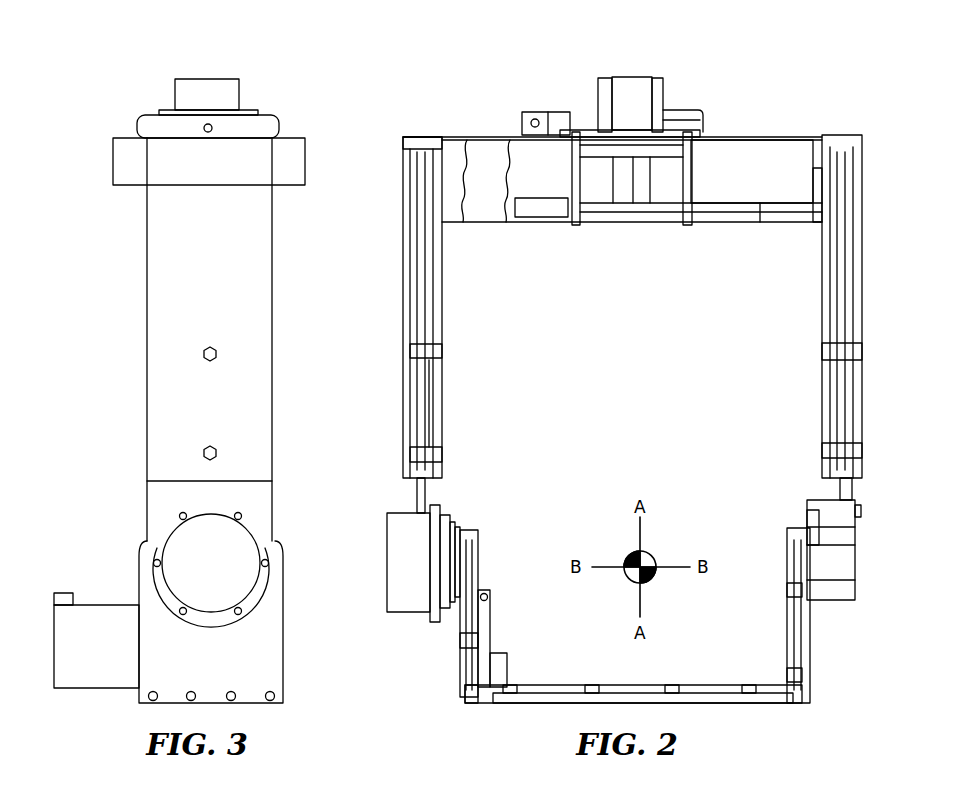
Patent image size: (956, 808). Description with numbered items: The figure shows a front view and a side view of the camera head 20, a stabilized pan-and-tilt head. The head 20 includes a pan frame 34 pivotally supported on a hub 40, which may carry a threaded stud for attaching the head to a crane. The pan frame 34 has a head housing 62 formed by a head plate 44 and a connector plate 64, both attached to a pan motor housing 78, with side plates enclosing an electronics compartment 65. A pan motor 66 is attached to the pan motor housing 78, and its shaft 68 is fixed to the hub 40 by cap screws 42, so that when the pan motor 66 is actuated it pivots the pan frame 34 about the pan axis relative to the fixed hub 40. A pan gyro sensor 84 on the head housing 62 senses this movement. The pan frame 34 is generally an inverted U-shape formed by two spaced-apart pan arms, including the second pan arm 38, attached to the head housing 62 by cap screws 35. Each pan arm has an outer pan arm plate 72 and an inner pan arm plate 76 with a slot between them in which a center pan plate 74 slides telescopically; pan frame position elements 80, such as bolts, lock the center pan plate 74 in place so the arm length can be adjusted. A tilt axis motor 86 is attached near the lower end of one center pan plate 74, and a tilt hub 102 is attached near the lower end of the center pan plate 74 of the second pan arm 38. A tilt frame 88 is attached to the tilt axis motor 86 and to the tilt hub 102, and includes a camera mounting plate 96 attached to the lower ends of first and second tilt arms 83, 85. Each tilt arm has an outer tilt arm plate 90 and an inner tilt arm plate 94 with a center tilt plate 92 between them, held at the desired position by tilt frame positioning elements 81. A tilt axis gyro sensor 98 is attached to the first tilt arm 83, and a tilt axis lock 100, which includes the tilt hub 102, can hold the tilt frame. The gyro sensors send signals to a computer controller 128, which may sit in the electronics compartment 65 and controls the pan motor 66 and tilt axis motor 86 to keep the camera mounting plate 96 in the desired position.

In FIG. 3, the camera head 20 is at (478, 135).
In FIG. 2, the camera head 20 is at (612, 138).
In FIG. 3, the pan frame 34 is at (275, 246).
In FIG. 2, the cap screws 35 is at (407, 137).
In FIG. 2, the second pan arm 38 is at (445, 400).
In FIG. 2, the hub 40 is at (598, 108).
In FIG. 2, the cap screws 42 is at (625, 76).
In FIG. 2, the head plate 44 is at (745, 137).
In FIG. 2, the head housing 62 is at (762, 170).
In FIG. 2, the connector plate 64 is at (745, 222).
In FIG. 2, the electronics compartment 65 is at (719, 190).
In FIG. 2, the pan motor 66 is at (600, 192).
In FIG. 2, the shaft 68 is at (640, 130).
In FIG. 3, the outer pan arm plate 72 is at (248, 336).
In FIG. 2, the center pan plate 74 is at (427, 382).
In FIG. 2, the inner pan arm plate 76 is at (438, 427).
In FIG. 2, the pan motor housing 78 is at (680, 188).
In FIG. 2, the pan frame position elements 80 is at (442, 350).
In FIG. 2, the tilt frame positioning elements 81 is at (788, 593).
In FIG. 2, the first tilt arm 83 is at (465, 690).
In FIG. 2, the pan gyro sensor 84 is at (540, 212).
In FIG. 2, the second tilt arm 85 is at (810, 652).
In FIG. 3, the tilt axis motor 86 is at (240, 578).
In FIG. 2, the tilt axis motor 86 is at (423, 563).
In FIG. 2, the tilt frame 88 is at (455, 660).
In FIG. 2, the outer tilt arm plate 90 is at (460, 640).
In FIG. 2, the center tilt plate 92 is at (482, 636).
In FIG. 2, the inner tilt arm plate 94 is at (480, 655).
In FIG. 2, the camera mounting plate 96 is at (540, 697).
In FIG. 2, the tilt axis gyro sensor 98 is at (488, 608).
In FIG. 2, the tilt axis lock 100 is at (815, 496).
In FIG. 2, the tilt hub 102 is at (806, 527).
In FIG. 2, the computer controller 128 is at (760, 214).